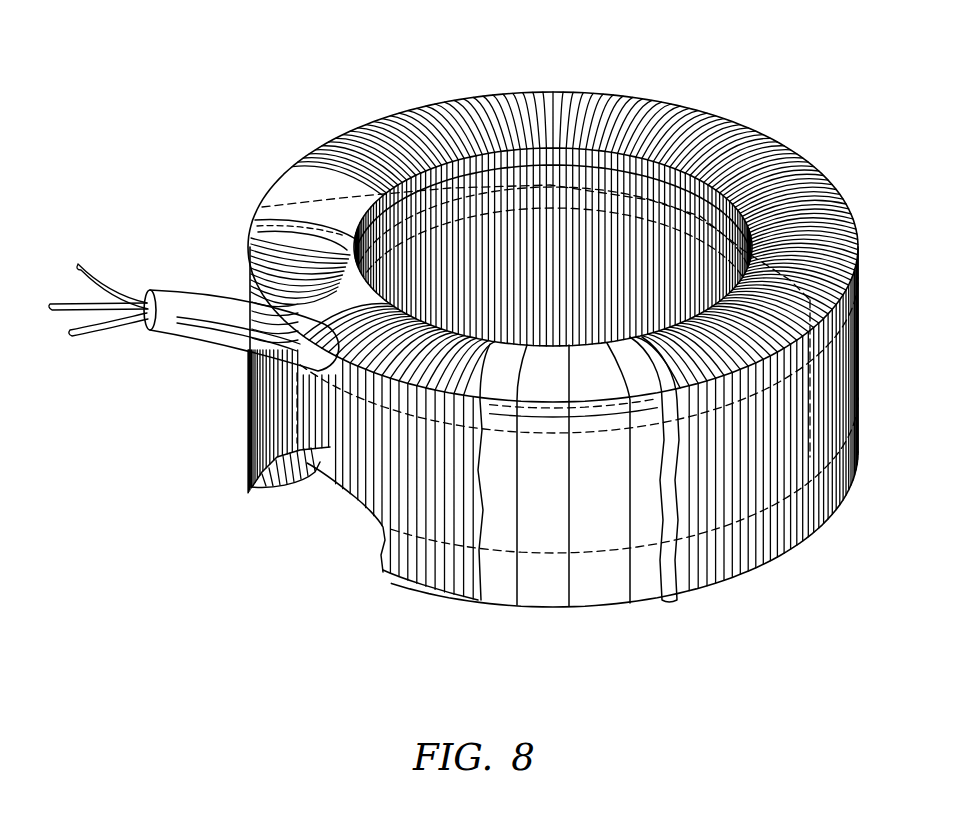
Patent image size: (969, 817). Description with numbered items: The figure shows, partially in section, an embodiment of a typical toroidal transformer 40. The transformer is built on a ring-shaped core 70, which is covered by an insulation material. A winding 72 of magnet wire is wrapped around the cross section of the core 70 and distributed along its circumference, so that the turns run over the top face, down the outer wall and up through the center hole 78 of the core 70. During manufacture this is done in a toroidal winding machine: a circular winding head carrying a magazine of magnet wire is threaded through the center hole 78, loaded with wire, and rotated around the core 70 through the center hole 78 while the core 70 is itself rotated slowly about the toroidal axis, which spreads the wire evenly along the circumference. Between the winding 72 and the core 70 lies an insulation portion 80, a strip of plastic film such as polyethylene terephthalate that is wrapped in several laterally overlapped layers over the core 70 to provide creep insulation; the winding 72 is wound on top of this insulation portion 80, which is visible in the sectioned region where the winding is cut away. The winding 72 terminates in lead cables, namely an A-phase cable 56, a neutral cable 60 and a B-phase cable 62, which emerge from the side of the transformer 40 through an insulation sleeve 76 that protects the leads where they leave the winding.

The toroidal transformer 40 is at (263, 104).
The A-phase cable 56 is at (107, 281).
The neutral cable 60 is at (55, 303).
The B-phase cable 62 is at (92, 330).
The core 70 is at (335, 500).
The winding 72 is at (797, 537).
The insulation sleeve 76 is at (193, 336).
The center hole 78 is at (553, 218).
The insulation portion 80 is at (582, 608).